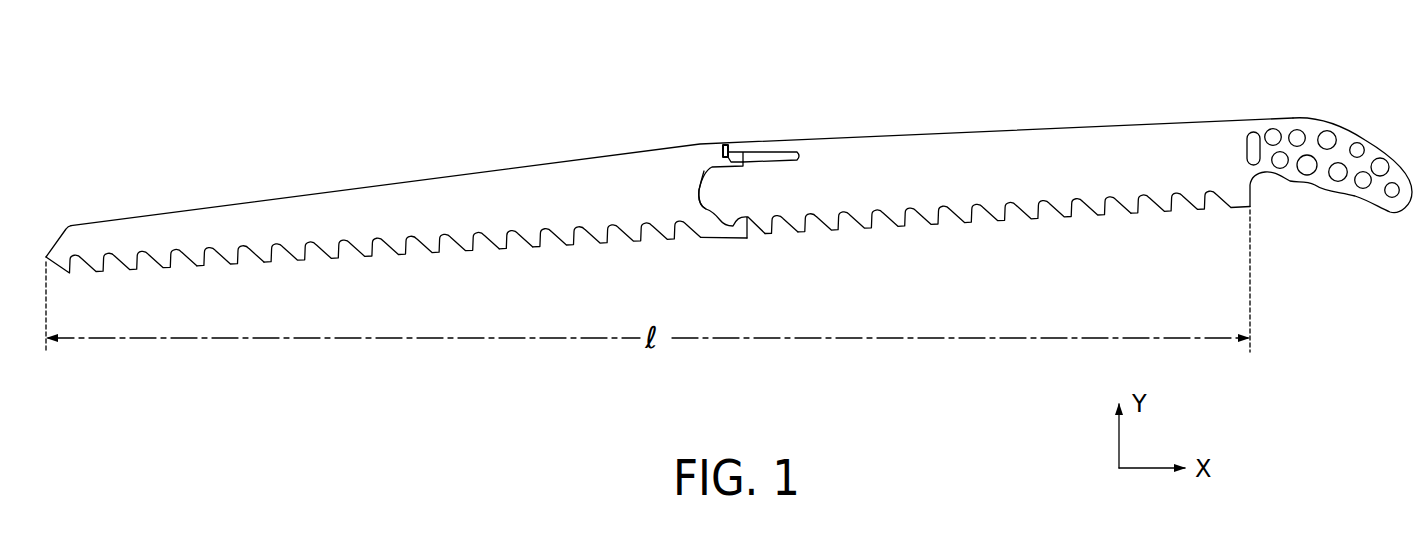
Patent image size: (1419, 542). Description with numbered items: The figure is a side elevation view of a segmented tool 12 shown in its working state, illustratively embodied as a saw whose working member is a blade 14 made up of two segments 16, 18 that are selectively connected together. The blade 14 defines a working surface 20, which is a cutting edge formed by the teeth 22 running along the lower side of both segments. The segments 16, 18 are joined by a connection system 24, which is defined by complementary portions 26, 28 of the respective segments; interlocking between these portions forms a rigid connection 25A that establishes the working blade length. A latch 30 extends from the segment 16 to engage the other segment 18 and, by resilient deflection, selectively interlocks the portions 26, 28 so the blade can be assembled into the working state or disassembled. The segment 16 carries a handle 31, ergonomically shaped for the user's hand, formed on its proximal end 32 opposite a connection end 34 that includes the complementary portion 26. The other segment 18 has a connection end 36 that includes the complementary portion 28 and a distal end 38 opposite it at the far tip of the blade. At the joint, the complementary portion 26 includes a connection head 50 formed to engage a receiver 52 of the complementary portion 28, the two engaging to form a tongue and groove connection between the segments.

The segmented tool 12 is at (1058, 79).
The blade 14 is at (904, 106).
The segment 16 is at (992, 173).
The segment 18 is at (582, 203).
The working surface 20 is at (506, 252).
The teeth 22 is at (238, 265).
The connection system 24 is at (762, 244).
The rigid connection 25A is at (733, 137).
The complementary portion 26 is at (798, 126).
The complementary portion 28 is at (711, 137).
The latch 30 is at (773, 143).
The handle 31 is at (1360, 124).
The proximal end 32 is at (1393, 138).
The connection end 34 is at (789, 247).
The connection end 36 is at (705, 247).
The distal end 38 is at (54, 223).
The connection head 50 is at (723, 192).
The receiver 52 is at (686, 197).